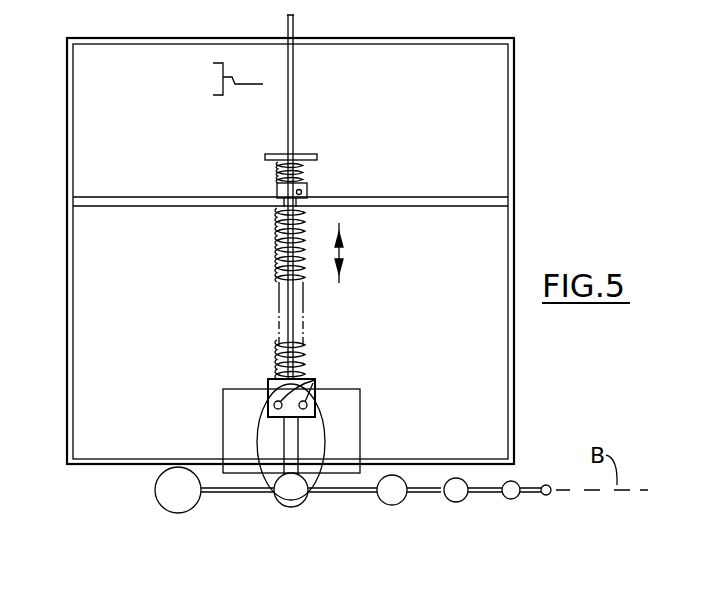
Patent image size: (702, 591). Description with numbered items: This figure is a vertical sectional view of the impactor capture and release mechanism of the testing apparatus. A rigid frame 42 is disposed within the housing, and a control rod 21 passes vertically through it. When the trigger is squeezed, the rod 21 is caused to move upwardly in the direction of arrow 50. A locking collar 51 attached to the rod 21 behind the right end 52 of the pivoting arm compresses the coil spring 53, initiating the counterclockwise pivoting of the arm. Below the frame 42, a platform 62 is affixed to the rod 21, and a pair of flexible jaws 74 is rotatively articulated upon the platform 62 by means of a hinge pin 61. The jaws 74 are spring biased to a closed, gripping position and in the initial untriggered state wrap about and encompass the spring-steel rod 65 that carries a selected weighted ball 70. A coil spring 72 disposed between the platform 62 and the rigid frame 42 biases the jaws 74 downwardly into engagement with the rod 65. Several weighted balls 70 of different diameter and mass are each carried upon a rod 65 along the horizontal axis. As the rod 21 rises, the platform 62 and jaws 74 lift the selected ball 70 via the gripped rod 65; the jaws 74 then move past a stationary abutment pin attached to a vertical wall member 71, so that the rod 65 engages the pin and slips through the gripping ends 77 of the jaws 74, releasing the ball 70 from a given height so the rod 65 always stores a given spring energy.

The control rod 21 is at (295, 98).
The rigid frame 42 is at (183, 208).
The arrow 50 is at (345, 250).
The locking collar 51 is at (272, 193).
The right end of the pivoting arm 52 is at (272, 152).
The coil spring 53 is at (280, 168).
The hinge pin 61 is at (315, 381).
The platform 62 is at (272, 378).
The spring-steel rod 65 is at (237, 493).
The weighted ball 70 is at (172, 500).
The vertical wall member 71 is at (235, 388).
The coil spring 72 is at (305, 352).
The flexible jaws 74 is at (268, 428).
The gripping ends 77 is at (297, 492).